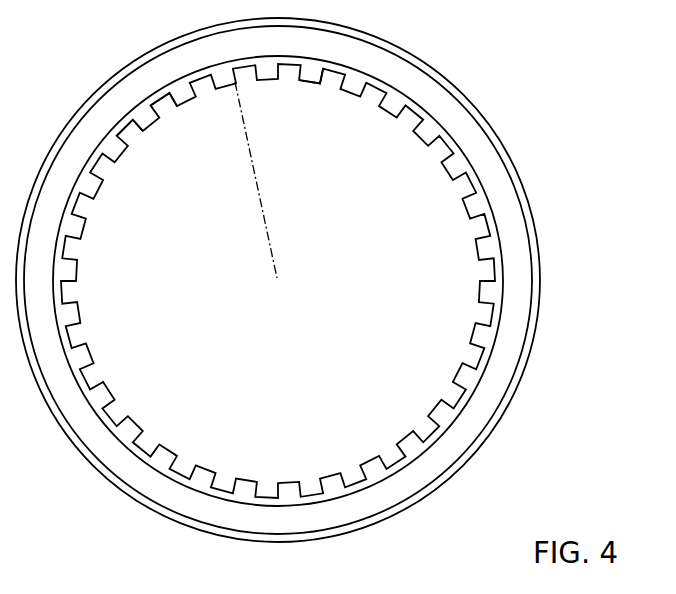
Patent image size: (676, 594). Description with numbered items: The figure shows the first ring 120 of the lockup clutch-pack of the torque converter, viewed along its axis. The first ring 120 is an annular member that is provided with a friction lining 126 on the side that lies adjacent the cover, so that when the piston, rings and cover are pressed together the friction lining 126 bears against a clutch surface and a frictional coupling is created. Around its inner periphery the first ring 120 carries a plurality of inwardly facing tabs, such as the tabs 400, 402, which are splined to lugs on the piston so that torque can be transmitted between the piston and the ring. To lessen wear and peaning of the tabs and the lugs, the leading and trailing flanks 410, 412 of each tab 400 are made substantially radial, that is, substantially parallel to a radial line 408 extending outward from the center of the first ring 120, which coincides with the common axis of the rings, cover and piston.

The first ring 120 is at (465, 95).
The friction lining 126 is at (508, 207).
The tab 400 is at (153, 123).
The tab 402 is at (308, 82).
The radial line 408 is at (260, 203).
The leading flank 410 is at (158, 108).
The trailing flank 412 is at (131, 130).